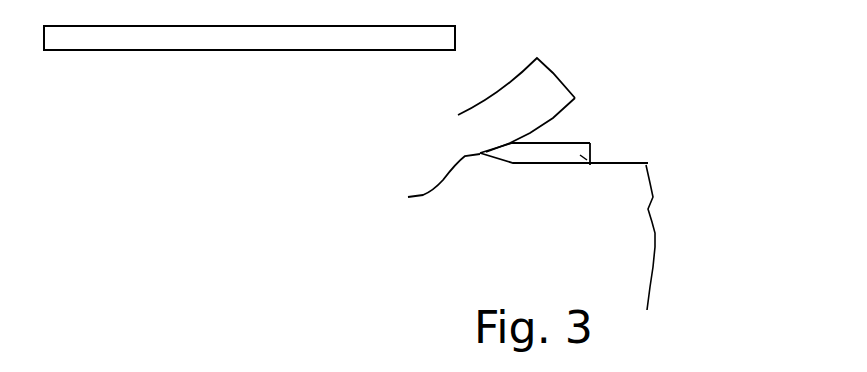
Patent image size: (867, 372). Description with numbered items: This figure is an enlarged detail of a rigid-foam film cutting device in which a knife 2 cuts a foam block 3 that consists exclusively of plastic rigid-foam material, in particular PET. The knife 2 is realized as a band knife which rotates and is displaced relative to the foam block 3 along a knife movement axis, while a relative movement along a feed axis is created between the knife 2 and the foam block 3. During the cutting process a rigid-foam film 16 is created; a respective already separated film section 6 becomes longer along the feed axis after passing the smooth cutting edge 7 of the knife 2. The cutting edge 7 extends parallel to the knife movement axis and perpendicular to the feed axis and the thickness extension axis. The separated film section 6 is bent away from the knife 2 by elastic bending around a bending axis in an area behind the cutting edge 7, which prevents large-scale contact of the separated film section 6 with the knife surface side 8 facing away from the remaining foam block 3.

The rigid-foam film 16 is at (308, 50).
The separated film section 6 is at (544, 83).
The knife surface side 8 is at (558, 143).
The knife 2 is at (592, 145).
The cutting edge 7 is at (435, 185).
The foam block 3 is at (630, 212).